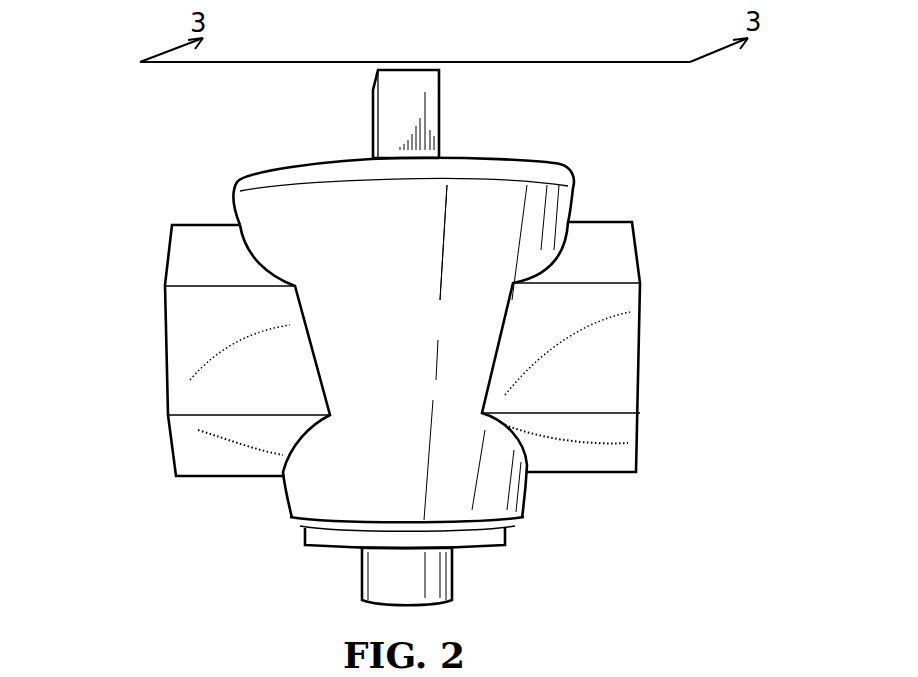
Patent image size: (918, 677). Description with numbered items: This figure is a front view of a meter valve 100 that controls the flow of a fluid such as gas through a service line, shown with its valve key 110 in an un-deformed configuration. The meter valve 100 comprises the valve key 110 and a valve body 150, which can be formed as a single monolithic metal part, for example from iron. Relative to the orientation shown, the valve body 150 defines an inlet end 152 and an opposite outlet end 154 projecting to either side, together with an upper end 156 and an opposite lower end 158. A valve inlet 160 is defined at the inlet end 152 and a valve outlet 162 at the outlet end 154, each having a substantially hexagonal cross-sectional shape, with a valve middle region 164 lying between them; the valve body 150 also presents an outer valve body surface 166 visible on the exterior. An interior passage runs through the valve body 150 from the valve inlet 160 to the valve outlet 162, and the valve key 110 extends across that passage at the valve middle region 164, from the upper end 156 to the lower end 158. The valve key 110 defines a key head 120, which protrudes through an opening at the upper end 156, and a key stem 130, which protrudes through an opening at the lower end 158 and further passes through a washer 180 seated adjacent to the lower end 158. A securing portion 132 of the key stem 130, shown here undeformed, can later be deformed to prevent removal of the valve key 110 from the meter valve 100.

The meter valve 100 is at (694, 111).
The valve key 110 is at (343, 102).
The key head 120 is at (425, 100).
The key stem 130 is at (433, 575).
The securing portion 132 is at (363, 567).
The valve body 150 is at (626, 192).
The inlet end 152 is at (168, 257).
The outlet end 154 is at (640, 285).
The upper end 156 is at (247, 178).
The lower end 158 is at (292, 520).
The valve inlet 160 is at (168, 355).
The valve outlet 162 is at (645, 380).
The valve middle region 164 is at (453, 363).
The outer valve body surface 166 is at (187, 392).
The washer 180 is at (505, 536).